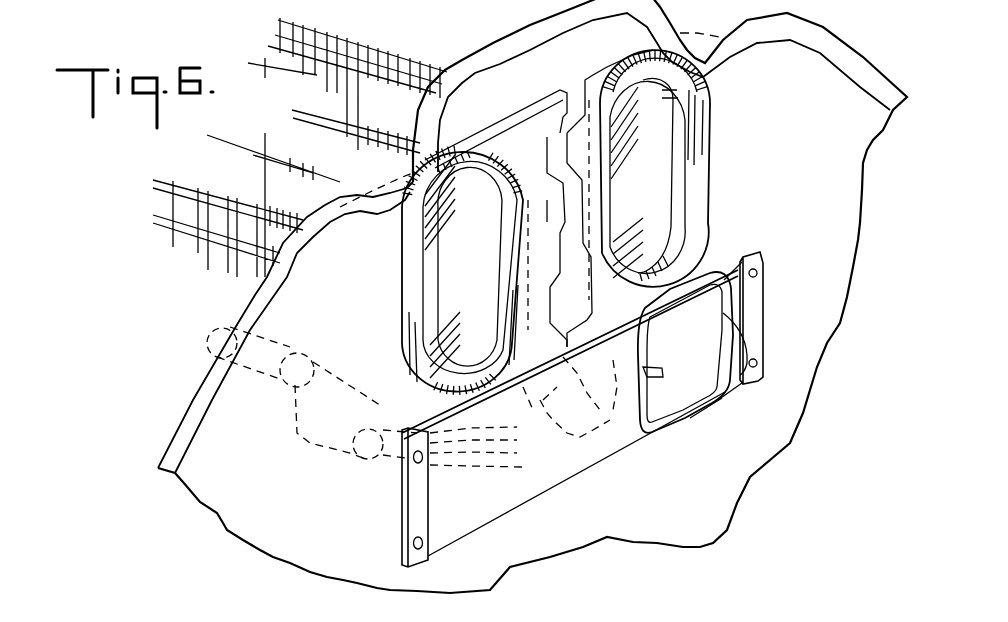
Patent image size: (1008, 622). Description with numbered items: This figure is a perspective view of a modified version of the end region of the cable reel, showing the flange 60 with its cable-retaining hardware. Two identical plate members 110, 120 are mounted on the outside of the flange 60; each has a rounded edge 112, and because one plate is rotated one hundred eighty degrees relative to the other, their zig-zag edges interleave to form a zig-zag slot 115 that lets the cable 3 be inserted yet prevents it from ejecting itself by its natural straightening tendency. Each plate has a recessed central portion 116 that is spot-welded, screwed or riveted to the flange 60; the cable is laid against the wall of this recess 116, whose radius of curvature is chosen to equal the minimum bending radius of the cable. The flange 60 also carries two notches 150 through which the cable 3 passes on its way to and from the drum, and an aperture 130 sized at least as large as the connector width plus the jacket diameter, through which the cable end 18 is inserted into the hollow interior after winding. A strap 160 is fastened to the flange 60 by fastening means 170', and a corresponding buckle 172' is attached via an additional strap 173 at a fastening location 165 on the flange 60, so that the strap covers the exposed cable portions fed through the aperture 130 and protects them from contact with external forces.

The flange 60 is at (300, 288).
The notch 150 is at (397, 72).
The plate member 110 is at (417, 272).
The rounded edge 112 is at (710, 153).
The zig-zag slot 115 is at (557, 133).
The recessed central portion 116 is at (479, 276).
The plate member 120 is at (600, 73).
The aperture 130 is at (600, 447).
The strap member 160 is at (468, 522).
The strap fastening location 165 is at (760, 290).
The fastening means 170' is at (387, 497).
The buckle 172' is at (706, 315).
The additional strap 173 is at (733, 262).
The cable end connector 18 is at (300, 413).
The cable 3 is at (340, 393).